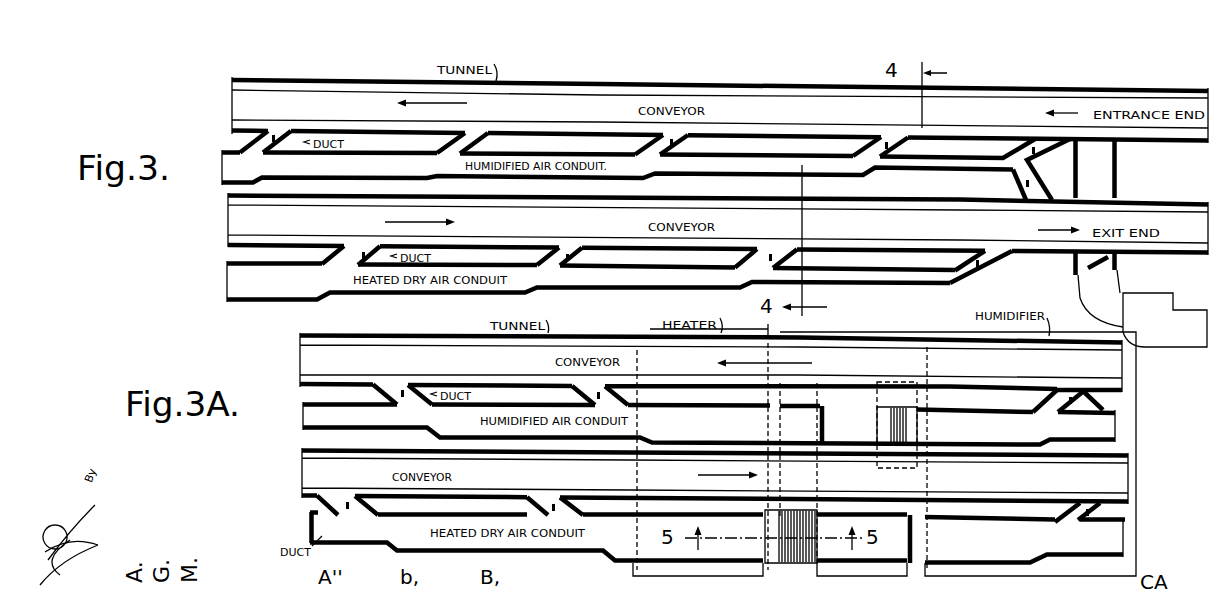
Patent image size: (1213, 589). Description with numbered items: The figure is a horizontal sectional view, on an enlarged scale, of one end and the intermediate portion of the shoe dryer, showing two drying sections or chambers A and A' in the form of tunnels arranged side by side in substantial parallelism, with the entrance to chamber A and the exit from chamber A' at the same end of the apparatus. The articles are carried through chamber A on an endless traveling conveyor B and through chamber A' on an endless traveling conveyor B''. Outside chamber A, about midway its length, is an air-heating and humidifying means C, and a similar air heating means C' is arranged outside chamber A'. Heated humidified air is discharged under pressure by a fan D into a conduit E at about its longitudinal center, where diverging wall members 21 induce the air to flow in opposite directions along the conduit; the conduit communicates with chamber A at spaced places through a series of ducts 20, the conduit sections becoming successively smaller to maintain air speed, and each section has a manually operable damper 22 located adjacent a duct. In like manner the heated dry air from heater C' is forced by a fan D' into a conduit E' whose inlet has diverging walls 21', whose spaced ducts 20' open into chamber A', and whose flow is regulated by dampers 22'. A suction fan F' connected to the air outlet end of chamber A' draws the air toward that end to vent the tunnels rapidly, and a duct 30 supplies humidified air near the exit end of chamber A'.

In FIG. 3, the ducts 20 is at (661, 118).
In FIG. 3A, the ducts 20 is at (702, 377).
In FIG. 3, the damper 22 is at (655, 127).
In FIG. 3A, the damper 22 is at (738, 381).
In FIG. 3, the ducts 20' is at (632, 293).
In FIG. 3A, the ducts 20' is at (717, 492).
In FIG. 3, the dampers 22' is at (667, 290).
In FIG. 3A, the dampers 22' is at (708, 495).
In FIG. 3, the duct 30 is at (1012, 187).
In FIG. 3A, the diverging wall members 21 is at (927, 425).
In FIG. 3A, the diverging walls 21' is at (791, 549).
In FIG. 3, the drying chamber A is at (1049, 71).
In FIG. 3A, the drying chamber A is at (451, 323).
In FIG. 3, the endless traveling conveyor B is at (720, 101).
In FIG. 3A, the endless traveling conveyor B is at (692, 362).
In FIG. 3, the conduit E is at (611, 154).
In FIG. 3A, the conduit E is at (689, 415).
In FIG. 3, the endless traveling conveyor B'' is at (697, 224).
In FIG. 3A, the endless traveling conveyor B'' is at (695, 476).
In FIG. 3, the conduit E' is at (571, 282).
In FIG. 3A, the conduit E' is at (695, 537).
In FIG. 3, the drying chamber A' is at (1182, 191).
In FIG. 3A, the drying chamber A' is at (284, 442).
In FIG. 3, the suction fan F' is at (1142, 299).
In FIG. 3A, the air-heating and humidifying means C is at (933, 318).
In FIG. 3A, the air heating means C' is at (617, 319).
In FIG. 3A, the fan D is at (878, 352).
In FIG. 3A, the fan D' is at (827, 548).